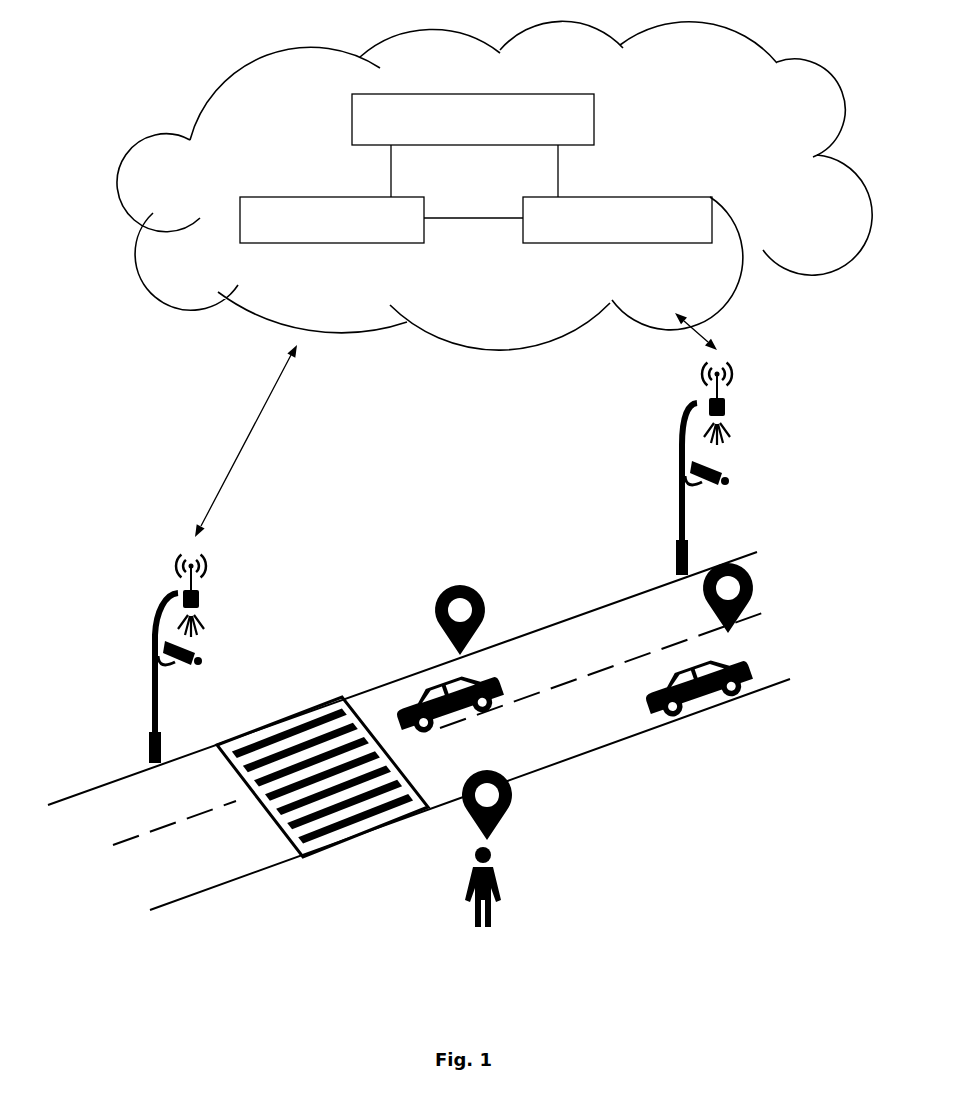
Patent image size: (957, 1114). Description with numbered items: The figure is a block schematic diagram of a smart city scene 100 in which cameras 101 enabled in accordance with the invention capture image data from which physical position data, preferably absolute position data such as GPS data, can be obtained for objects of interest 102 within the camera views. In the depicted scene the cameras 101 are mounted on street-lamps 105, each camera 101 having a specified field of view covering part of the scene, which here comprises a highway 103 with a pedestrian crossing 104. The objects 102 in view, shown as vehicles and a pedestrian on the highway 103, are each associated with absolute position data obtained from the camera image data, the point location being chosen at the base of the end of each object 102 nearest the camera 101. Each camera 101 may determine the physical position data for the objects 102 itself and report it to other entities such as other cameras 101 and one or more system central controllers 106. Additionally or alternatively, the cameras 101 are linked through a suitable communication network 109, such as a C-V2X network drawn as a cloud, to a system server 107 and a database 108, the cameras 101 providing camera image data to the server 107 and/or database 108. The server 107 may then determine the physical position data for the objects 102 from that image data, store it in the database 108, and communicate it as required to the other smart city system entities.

The smart city scene 100 is at (160, 459).
The camera 101 is at (197, 655).
The object of interest 102 is at (653, 690).
The highway 103 is at (215, 870).
The pedestrian crossing 104 is at (335, 812).
The street-lamp 105 is at (155, 613).
The system central controller 106 is at (473, 119).
The system server 107 is at (332, 220).
The database 108 is at (617, 220).
The communication network 109 is at (494, 185).